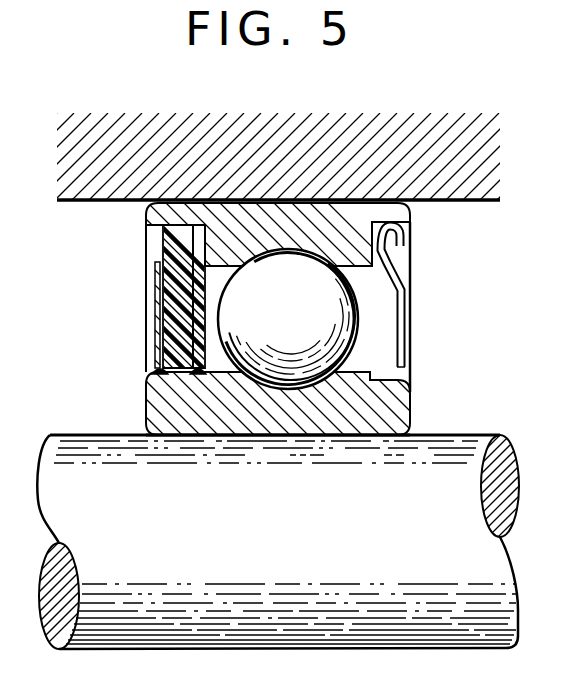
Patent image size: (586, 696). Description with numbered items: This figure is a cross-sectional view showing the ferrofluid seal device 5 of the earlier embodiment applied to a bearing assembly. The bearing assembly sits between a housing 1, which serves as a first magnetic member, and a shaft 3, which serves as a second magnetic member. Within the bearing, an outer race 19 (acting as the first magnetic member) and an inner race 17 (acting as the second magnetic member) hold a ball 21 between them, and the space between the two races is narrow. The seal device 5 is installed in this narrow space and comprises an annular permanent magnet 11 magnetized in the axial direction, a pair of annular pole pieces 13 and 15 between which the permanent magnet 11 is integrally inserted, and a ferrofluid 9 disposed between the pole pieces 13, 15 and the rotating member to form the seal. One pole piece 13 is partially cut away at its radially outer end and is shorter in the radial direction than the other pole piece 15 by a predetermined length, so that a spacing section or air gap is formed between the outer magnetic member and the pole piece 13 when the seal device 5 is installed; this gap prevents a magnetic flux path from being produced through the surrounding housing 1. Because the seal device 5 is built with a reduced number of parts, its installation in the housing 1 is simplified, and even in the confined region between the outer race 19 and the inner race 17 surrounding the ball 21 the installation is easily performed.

The housing 1 is at (496, 142).
The shaft 3 is at (466, 440).
The ferrofluid seal device 5 is at (152, 318).
The ferrofluid 9 is at (170, 373).
The annular permanent magnet 11 is at (170, 244).
The pole piece 13 is at (156, 283).
The pole piece 15 is at (156, 367).
The inner race 17 is at (400, 398).
The outer race 19 is at (407, 214).
The ball 21 is at (332, 338).